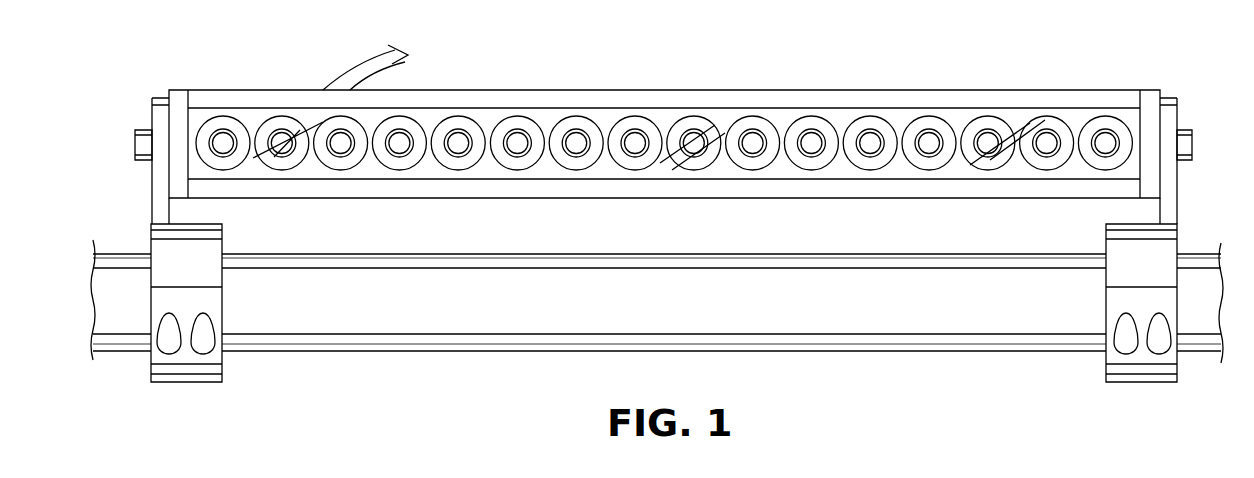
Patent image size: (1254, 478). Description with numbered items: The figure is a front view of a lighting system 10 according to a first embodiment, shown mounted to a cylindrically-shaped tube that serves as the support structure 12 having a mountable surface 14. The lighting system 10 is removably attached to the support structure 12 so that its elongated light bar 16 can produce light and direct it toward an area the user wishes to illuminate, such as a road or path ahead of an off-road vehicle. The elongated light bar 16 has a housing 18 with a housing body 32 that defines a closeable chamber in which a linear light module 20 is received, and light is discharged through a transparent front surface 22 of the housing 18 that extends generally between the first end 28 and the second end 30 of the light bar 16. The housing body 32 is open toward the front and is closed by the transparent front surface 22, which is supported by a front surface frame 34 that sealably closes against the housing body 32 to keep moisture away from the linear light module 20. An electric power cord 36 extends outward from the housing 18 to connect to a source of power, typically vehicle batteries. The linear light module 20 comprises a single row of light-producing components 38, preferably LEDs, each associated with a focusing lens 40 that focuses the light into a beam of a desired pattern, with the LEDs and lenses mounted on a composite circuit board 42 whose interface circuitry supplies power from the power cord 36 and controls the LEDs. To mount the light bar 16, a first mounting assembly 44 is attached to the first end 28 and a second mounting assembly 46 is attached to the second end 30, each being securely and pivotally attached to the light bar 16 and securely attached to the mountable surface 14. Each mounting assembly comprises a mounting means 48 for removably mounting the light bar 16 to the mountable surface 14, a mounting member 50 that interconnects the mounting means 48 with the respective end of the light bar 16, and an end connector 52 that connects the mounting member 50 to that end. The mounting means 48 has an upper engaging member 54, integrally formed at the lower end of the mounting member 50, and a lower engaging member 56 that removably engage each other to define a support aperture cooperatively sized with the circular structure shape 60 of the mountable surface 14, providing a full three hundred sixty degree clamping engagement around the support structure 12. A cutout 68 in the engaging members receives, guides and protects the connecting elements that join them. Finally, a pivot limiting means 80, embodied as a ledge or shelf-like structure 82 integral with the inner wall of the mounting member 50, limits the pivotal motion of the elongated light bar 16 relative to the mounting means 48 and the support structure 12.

The lighting system 10 is at (960, 50).
The support structure 12 is at (400, 318).
The mountable surface 14 is at (505, 322).
The elongated light bar 16 is at (742, 82).
The housing 18 is at (604, 208).
The linear light module 20 is at (846, 182).
The transparent front surface 22 is at (672, 138).
The first end 28 is at (172, 80).
The second end 30 is at (1155, 78).
The housing body 32 is at (248, 89).
The front surface frame 34 is at (818, 99).
The electric power cord 36 is at (345, 80).
The light-producing components 38 is at (521, 136).
The focusing lens 40 is at (590, 128).
The composite circuit board 42 is at (432, 118).
The first mounting assembly 44 is at (140, 220).
The second mounting assembly 46 is at (1188, 220).
The mounting means 48 is at (232, 305).
The mounting member 50 is at (160, 178).
The end connector 52 is at (141, 141).
The upper engaging member 54 is at (222, 252).
The lower engaging member 56 is at (176, 372).
The structure shape 60 is at (874, 358).
The cutout 68 is at (204, 342).
The pivot limiting means 80 is at (1108, 218).
The ledge or shelf-like structure 82 is at (200, 223).